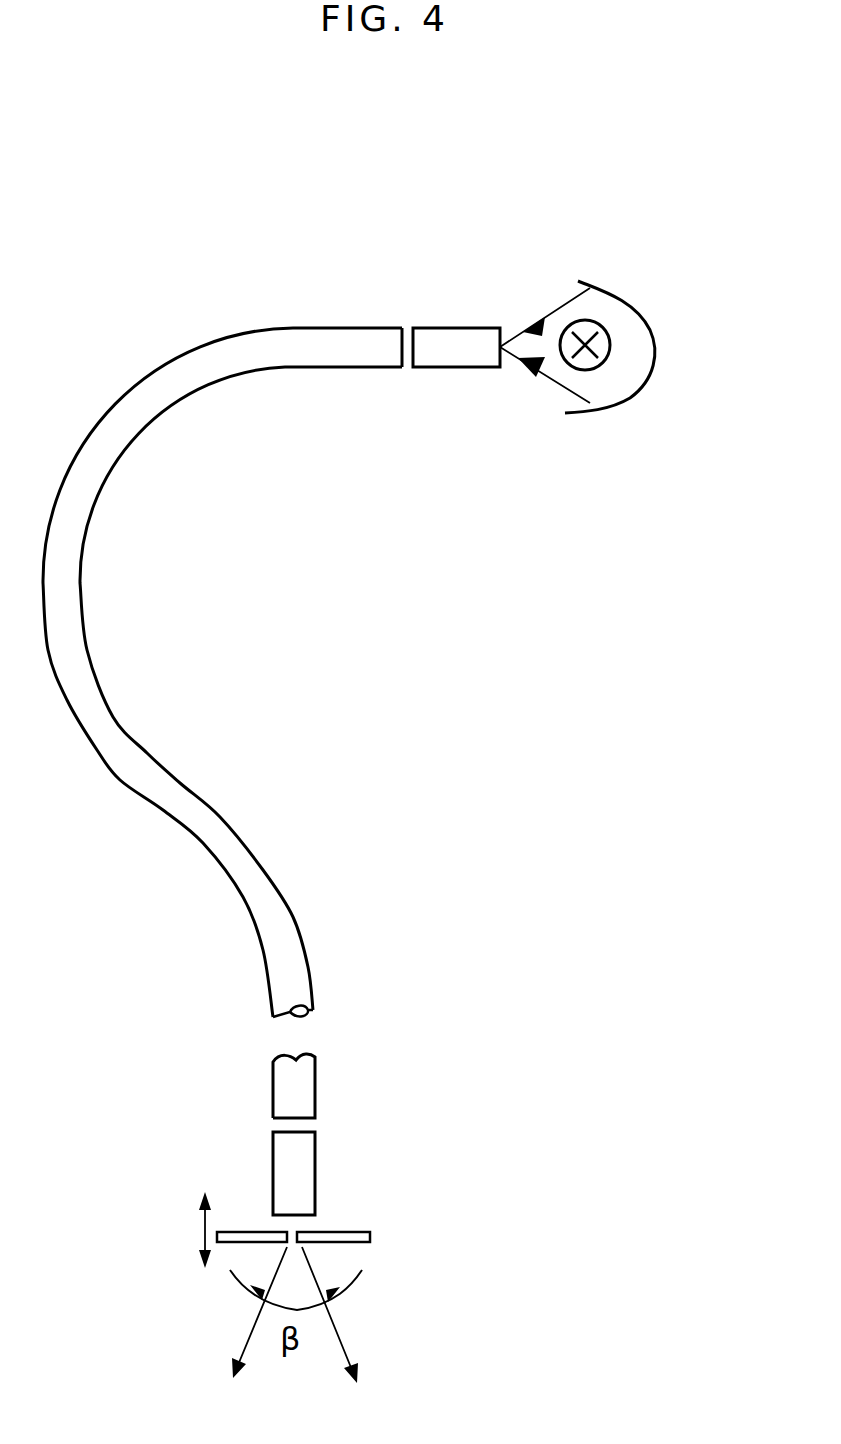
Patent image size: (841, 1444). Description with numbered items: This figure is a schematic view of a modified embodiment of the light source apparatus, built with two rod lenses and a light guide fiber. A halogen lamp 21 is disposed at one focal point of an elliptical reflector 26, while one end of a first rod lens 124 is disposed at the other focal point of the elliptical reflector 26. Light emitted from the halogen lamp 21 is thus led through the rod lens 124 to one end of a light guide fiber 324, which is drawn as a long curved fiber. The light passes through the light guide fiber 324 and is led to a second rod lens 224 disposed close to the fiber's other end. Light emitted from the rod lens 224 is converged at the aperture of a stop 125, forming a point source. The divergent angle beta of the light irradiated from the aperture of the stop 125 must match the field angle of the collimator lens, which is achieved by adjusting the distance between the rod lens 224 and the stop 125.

The halogen lamp 21 is at (597, 318).
The elliptical reflector 26 is at (655, 345).
The rod lens 124 is at (458, 367).
The light guide fiber 324 is at (83, 638).
The rod lens 224 is at (317, 1147).
The stop 125 is at (370, 1230).